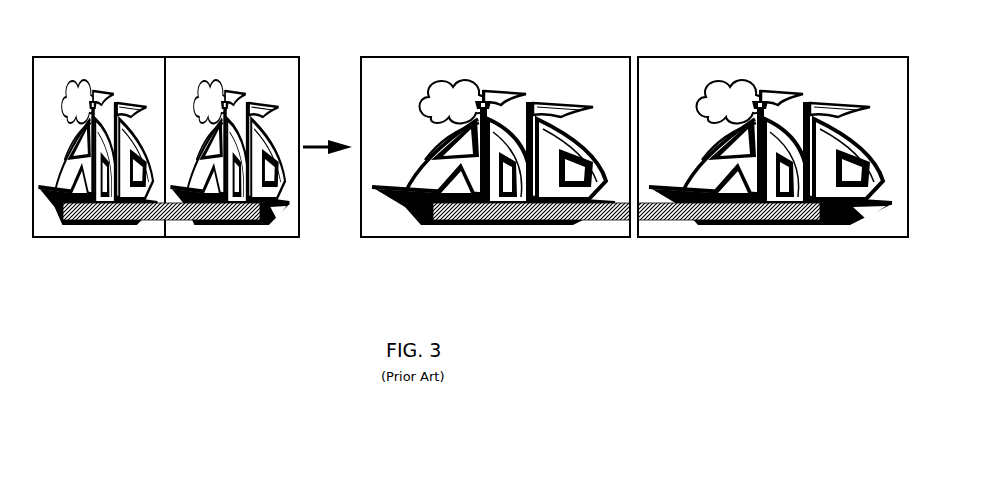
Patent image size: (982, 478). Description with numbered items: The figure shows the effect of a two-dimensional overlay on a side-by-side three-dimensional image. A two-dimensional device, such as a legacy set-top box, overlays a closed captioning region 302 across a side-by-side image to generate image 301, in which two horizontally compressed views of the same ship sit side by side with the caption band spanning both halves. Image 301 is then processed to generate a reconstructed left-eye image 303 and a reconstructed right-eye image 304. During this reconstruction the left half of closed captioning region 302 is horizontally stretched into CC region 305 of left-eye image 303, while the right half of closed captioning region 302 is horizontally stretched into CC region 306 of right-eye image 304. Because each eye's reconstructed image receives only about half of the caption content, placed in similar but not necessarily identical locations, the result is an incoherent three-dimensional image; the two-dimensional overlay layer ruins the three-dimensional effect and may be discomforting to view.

The image 301 is at (169, 240).
The closed captioning region 302 is at (245, 218).
The reconstructed left-eye image 303 is at (522, 245).
The reconstructed right-eye image 304 is at (734, 245).
The CC region 305 is at (459, 212).
The CC region 306 is at (793, 212).